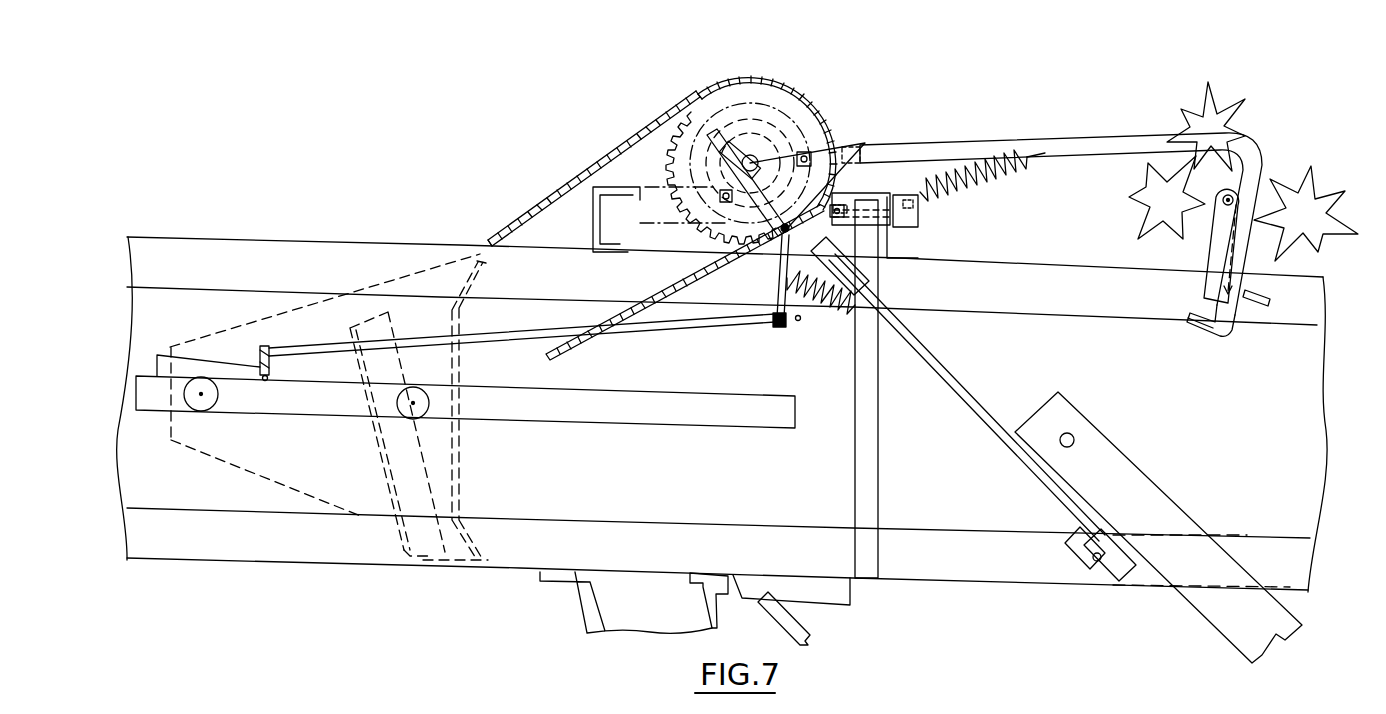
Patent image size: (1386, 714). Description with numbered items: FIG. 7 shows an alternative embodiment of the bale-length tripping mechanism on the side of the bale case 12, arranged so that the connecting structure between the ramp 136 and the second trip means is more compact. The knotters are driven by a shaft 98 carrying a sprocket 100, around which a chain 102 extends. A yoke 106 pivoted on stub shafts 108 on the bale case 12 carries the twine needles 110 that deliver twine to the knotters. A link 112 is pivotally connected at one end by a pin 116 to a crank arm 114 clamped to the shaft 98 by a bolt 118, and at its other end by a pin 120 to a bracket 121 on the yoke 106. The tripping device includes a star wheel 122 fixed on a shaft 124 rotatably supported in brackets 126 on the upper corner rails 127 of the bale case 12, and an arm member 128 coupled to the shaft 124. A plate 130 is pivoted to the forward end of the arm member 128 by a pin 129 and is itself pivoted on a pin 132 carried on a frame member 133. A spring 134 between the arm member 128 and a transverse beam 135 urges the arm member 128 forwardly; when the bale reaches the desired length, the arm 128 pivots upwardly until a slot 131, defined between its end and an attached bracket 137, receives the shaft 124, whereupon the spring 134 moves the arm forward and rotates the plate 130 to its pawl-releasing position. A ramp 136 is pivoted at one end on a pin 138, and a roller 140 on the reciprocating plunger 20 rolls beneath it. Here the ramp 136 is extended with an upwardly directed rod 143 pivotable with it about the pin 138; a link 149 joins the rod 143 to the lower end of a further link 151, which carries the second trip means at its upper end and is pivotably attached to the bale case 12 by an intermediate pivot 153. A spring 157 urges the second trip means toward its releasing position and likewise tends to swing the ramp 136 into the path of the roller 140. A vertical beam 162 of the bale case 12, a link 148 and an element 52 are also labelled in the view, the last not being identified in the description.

The bale case 12 is at (1310, 290).
The plunger 20 is at (457, 467).
The bracket 52 is at (664, 612).
The shaft 98 is at (762, 140).
The sprocket 100 is at (703, 87).
The chain 102 is at (556, 198).
The yoke 106 is at (1147, 503).
The stub shafts 108 is at (1074, 440).
The twine needles 110 is at (797, 635).
The link 112 is at (943, 370).
The crank arm 114 is at (792, 148).
The pin 116 is at (800, 318).
The bolt 118 is at (757, 115).
The pin 120 is at (1088, 566).
The bracket 121 is at (1120, 567).
The star wheel 122 is at (1300, 190).
The shaft 124 is at (1220, 200).
The brackets 126 is at (1210, 240).
The upper corner rails 127 is at (1285, 310).
The arm member 128 is at (1070, 143).
The pin 129 is at (863, 144).
The plate 130 is at (843, 130).
The slot 131 is at (1210, 313).
The pin 132 is at (920, 200).
The frame member 133 is at (917, 220).
The spring 134 is at (1047, 160).
The transverse beam 135 is at (918, 258).
The ramp 136 is at (137, 392).
The bracket 137 is at (1207, 330).
The pin 138 is at (267, 380).
The roller 140 is at (208, 405).
The rod 143 is at (257, 367).
The link 148 is at (548, 357).
The link 149 is at (430, 338).
The further link 151 is at (777, 286).
The intermediate pivot 153 is at (775, 322).
The spring 157 is at (817, 307).
The vertical beam 162 is at (880, 497).